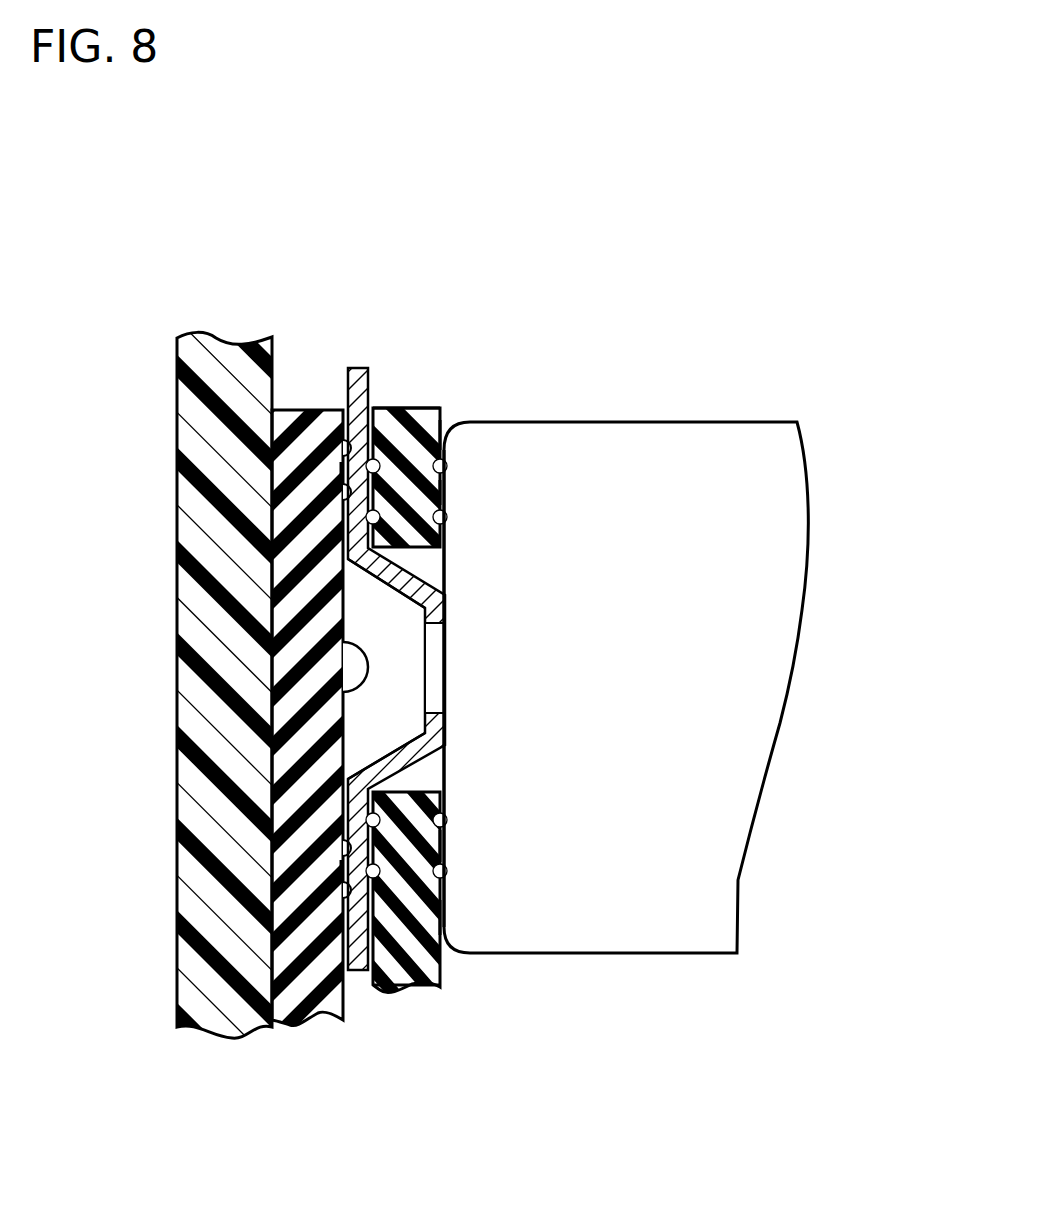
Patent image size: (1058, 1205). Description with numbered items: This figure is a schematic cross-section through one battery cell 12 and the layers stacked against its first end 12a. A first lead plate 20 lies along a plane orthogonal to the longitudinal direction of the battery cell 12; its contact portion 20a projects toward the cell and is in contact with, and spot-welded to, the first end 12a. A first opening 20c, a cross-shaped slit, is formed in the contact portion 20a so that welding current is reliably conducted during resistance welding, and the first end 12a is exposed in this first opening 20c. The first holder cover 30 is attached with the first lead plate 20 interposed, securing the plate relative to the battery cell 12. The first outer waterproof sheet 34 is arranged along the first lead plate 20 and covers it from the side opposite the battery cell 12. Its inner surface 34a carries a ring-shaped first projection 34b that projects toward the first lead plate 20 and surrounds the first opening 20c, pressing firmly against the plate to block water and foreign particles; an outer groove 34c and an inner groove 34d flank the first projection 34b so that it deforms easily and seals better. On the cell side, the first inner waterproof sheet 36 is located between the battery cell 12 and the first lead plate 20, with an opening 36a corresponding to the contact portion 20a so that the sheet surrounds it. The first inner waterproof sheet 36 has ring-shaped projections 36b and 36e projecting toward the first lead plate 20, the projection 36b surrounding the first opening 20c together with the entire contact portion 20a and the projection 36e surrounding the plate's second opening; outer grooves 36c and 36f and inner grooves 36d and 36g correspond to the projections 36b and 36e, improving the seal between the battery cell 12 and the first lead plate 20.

The battery cell 12 is at (757, 435).
The first end 12a is at (446, 788).
The first lead plate 20 is at (360, 378).
The contact portion 20a is at (446, 727).
The first opening 20c is at (447, 693).
The first holder cover 30 is at (212, 348).
The first outer waterproof sheet 34 is at (307, 415).
The inner surface 34a is at (352, 694).
The first projection 34b is at (338, 470).
The outer groove 34c is at (338, 444).
The inner groove 34d is at (338, 500).
The first inner waterproof sheet 36 is at (388, 420).
The opening 36a is at (446, 577).
The projection 36b is at (434, 430).
The outer groove 36c is at (380, 460).
The inner groove 36d is at (443, 445).
The projection 36e is at (446, 518).
The outer groove 36f is at (446, 497).
The inner groove 36g is at (446, 472).